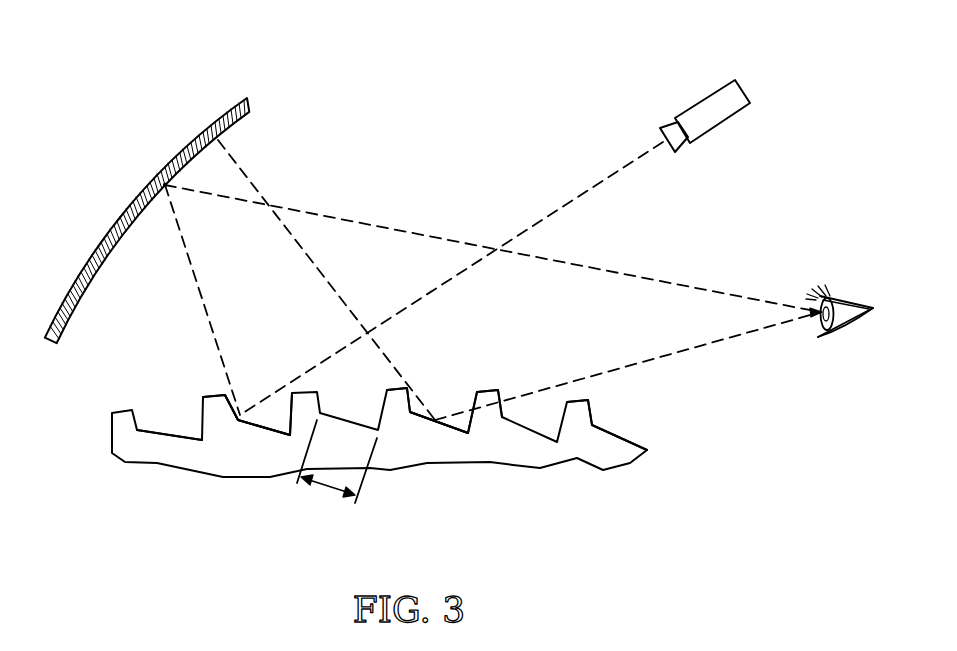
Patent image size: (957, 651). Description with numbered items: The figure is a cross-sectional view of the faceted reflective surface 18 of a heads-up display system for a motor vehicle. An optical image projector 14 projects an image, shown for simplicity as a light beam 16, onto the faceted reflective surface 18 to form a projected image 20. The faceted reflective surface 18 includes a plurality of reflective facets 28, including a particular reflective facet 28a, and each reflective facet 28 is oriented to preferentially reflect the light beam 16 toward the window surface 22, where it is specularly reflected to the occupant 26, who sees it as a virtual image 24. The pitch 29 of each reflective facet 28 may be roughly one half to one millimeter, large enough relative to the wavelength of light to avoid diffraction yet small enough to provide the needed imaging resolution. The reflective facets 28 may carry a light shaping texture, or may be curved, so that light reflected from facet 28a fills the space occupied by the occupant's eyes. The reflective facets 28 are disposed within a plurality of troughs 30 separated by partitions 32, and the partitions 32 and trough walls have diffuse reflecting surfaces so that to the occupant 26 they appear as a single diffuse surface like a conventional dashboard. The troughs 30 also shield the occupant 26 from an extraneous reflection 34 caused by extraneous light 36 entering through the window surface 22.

The optical image projector 14 is at (703, 107).
The light beam 16 is at (638, 160).
The faceted reflective surface 18 is at (97, 441).
The projected image 20 is at (437, 420).
The window surface 22 is at (167, 160).
The virtual image 24 is at (165, 185).
The occupant 26 is at (845, 305).
The reflective facets 28 is at (168, 437).
The reflective facet 28a is at (253, 425).
The pitch 29 is at (327, 490).
The troughs 30 is at (165, 420).
The partitions 32 is at (487, 390).
The extraneous reflection 34 is at (752, 333).
The extraneous light 36 is at (252, 182).